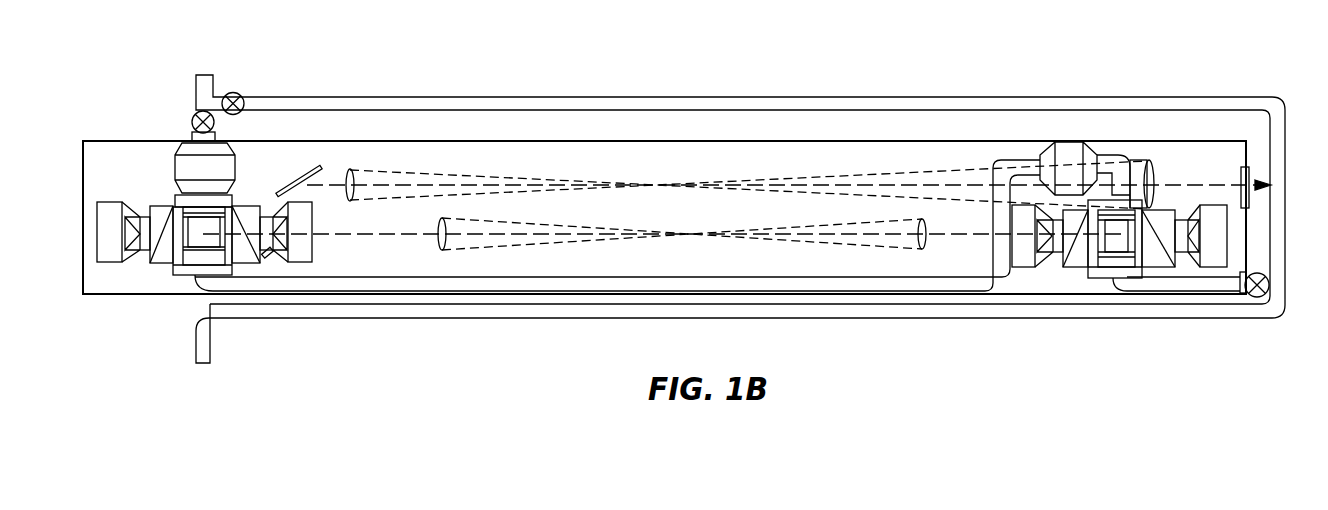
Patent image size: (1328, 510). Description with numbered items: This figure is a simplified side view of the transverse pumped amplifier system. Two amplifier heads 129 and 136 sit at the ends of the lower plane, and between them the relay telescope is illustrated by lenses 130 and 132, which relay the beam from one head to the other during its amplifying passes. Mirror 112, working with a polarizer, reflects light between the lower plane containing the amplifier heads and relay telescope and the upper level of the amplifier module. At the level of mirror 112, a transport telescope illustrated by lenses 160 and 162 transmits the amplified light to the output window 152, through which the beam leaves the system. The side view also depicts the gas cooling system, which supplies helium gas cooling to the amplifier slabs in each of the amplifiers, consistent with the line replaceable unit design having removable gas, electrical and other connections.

The mirror 112 is at (300, 178).
The amplifier head 129 is at (227, 336).
The lens 130 is at (441, 251).
The lens 132 is at (923, 250).
The amplifier head 136 is at (1139, 336).
The output window 152 is at (1251, 167).
The lens 160 is at (350, 169).
The lens 162 is at (1150, 160).